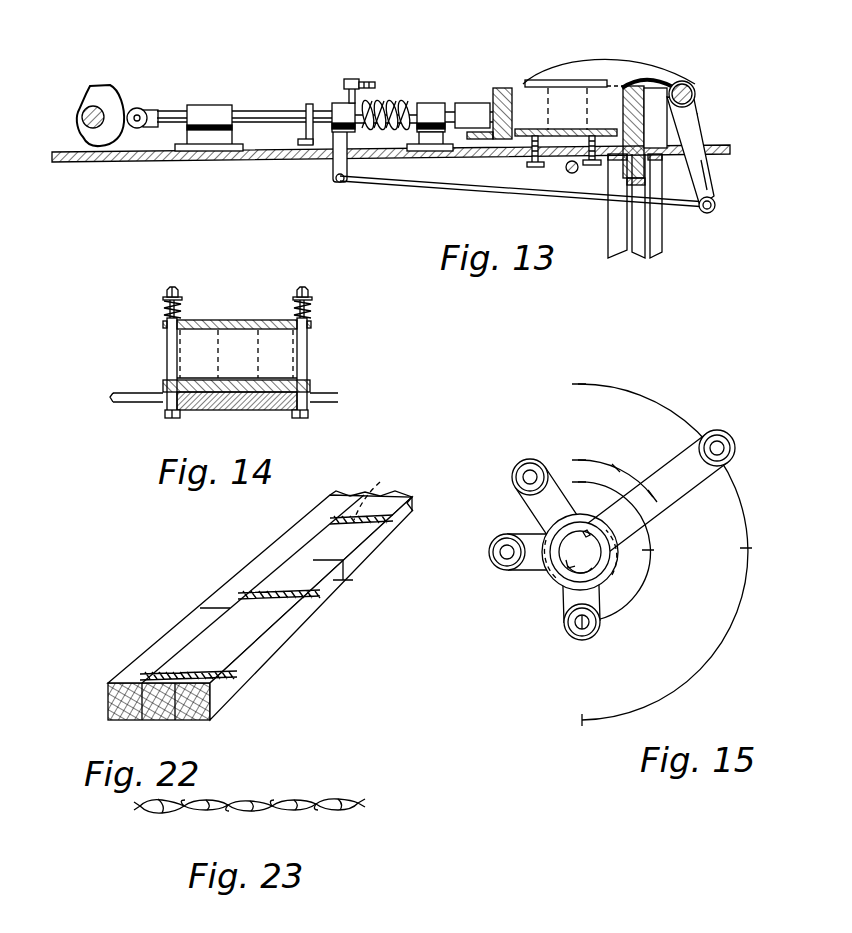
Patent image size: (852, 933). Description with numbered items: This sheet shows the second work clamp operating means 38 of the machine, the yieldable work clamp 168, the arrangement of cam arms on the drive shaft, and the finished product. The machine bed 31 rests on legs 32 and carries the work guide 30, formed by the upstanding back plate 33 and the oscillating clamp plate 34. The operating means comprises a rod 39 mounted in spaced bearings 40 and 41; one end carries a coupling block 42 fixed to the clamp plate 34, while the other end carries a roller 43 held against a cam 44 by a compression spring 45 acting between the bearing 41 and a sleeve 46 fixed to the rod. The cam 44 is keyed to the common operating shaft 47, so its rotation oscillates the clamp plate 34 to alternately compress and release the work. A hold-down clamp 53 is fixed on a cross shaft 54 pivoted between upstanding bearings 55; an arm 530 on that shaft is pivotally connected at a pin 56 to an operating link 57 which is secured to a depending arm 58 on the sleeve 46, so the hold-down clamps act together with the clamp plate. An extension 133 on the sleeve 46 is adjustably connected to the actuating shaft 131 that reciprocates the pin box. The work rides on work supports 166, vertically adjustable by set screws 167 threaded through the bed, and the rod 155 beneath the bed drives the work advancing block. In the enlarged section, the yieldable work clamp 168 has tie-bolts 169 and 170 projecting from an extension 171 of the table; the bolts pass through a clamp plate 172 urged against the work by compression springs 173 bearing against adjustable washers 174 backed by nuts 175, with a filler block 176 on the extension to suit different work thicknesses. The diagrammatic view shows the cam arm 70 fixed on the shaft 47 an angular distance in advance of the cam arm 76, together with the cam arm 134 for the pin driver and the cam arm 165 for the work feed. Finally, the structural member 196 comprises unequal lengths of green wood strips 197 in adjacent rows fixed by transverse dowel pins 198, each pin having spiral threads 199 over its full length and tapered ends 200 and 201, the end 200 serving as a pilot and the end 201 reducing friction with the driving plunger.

In FIG. 13, the work guide 30 is at (556, 105).
In FIG. 13, the machine bed 31 is at (81, 163).
In FIG. 14, the machine bed 31 is at (120, 393).
In FIG. 13, the legs 32 is at (656, 233).
In FIG. 13, the back plate 33 is at (646, 86).
In FIG. 13, the clamp plate 34 is at (501, 89).
In FIG. 13, the work clamp operating means 38 is at (333, 56).
In FIG. 13, the rod 39 is at (278, 118).
In FIG. 13, the bearing 40 is at (217, 118).
In FIG. 13, the bearing 41 is at (428, 110).
In FIG. 13, the coupling block 42 is at (468, 105).
In FIG. 13, the roller 43 is at (141, 109).
In FIG. 13, the cam 44 is at (108, 100).
In FIG. 15, the cam 44 is at (613, 571).
In FIG. 13, the compression spring 45 is at (392, 105).
In FIG. 13, the sleeve 46 is at (339, 107).
In FIG. 13, the operating shaft 47 is at (85, 110).
In FIG. 15, the operating shaft 47 is at (590, 548).
In FIG. 13, the work hold-down clamp 53 is at (635, 71).
In FIG. 13, the cross shaft 54 is at (695, 86).
In FIG. 13, the bearing 55 is at (676, 130).
In FIG. 13, the link pin 56 is at (716, 204).
In FIG. 13, the operating link 57 is at (473, 189).
In FIG. 13, the depending arm 58 is at (334, 172).
In FIG. 15, the cam arm 70 is at (528, 533).
In FIG. 15, the cam arm 76 is at (567, 612).
In FIG. 13, the actuating shaft 131 is at (372, 83).
In FIG. 13, the extension 133 is at (352, 80).
In FIG. 15, the cam arm 134 is at (713, 470).
In FIG. 13, the rod 155 is at (570, 174).
In FIG. 15, the cam arm 165 is at (530, 498).
In FIG. 13, the work supports 166 is at (586, 96).
In FIG. 13, the set screws 167 is at (527, 164).
In FIG. 14, the yieldable work clamp 168 is at (328, 326).
In FIG. 14, the tie-bolt 169 is at (167, 347).
In FIG. 14, the tie-bolt 170 is at (308, 356).
In FIG. 14, the extension 171 is at (227, 405).
In FIG. 14, the clamp plate 172 is at (231, 321).
In FIG. 14, the compression springs 173 is at (165, 305).
In FIG. 14, the adjustable washer 174 is at (180, 297).
In FIG. 14, the nut 175 is at (168, 290).
In FIG. 14, the filler block 176 is at (311, 384).
In FIG. 22, the structural member 196 is at (137, 648).
In FIG. 22, the green wood strips 197 is at (287, 546).
In FIG. 22, the dowel pins 198 is at (237, 678).
In FIG. 23, the dowel pins 198 is at (345, 804).
In FIG. 23, the spiral threads 199 is at (283, 810).
In FIG. 23, the tapered end 200 is at (362, 806).
In FIG. 23, the tapered end 201 is at (140, 810).
In FIG. 13, the arm 530 is at (709, 178).